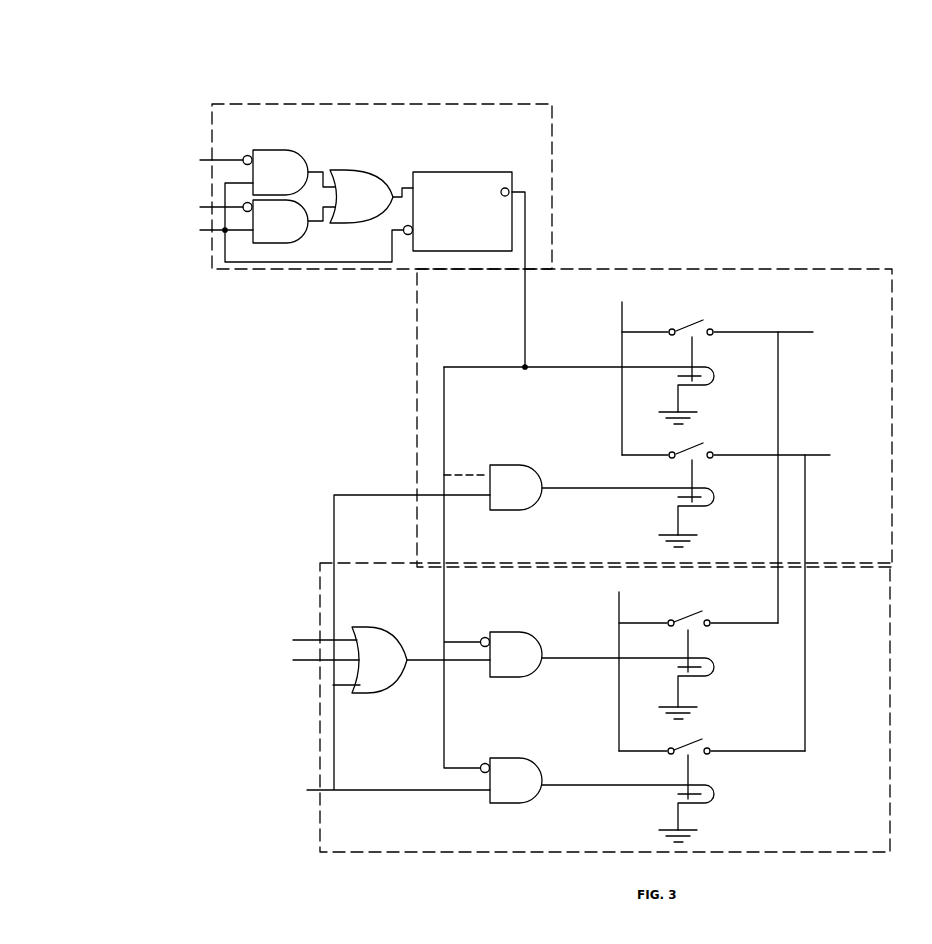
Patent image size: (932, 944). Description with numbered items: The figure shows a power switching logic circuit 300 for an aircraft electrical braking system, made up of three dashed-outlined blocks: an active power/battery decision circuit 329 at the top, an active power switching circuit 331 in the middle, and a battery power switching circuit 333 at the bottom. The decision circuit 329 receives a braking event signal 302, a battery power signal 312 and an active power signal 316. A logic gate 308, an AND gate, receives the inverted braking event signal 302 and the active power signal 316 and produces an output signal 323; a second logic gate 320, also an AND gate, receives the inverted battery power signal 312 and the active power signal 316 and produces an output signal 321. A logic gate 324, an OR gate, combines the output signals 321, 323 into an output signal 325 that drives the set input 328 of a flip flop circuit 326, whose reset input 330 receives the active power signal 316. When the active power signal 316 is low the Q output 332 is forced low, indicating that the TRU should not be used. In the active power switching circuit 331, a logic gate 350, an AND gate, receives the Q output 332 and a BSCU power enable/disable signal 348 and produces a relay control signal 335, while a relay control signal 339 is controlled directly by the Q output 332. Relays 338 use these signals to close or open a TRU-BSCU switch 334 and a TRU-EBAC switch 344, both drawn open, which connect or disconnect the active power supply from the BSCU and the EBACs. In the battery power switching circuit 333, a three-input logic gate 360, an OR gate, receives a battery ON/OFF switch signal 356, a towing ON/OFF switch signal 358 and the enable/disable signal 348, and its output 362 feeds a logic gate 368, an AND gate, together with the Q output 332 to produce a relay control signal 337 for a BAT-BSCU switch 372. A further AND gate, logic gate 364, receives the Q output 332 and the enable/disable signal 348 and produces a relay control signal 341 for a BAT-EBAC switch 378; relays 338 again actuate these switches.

The power switching logic circuit 300 is at (120, 31).
The braking event signal 302 is at (234, 156).
The logic gate 308 is at (266, 150).
The battery power signal 312 is at (205, 205).
The active power signal 316 is at (231, 183).
The logic gate 320 is at (285, 246).
The output signal 321 is at (318, 223).
The output signal 323 is at (323, 170).
The logic gate 324 is at (345, 172).
The output signal 325 is at (400, 188).
The flip flop circuit 326 is at (494, 171).
The set input 328 is at (424, 187).
The active power/battery decision circuit 329 is at (438, 104).
The reset input 330 is at (425, 230).
The active power switching circuit 331 is at (673, 268).
The Q output 332 is at (522, 192).
The battery power switching circuit 333 is at (538, 852).
The TRU-BSCU switch 334 is at (688, 332).
The relay control signal 335 is at (688, 471).
The relay control signal 337 is at (686, 639).
The relays 338 is at (711, 379).
The relay control signal 339 is at (565, 367).
The relay control signal 341 is at (686, 767).
The TRU-EBAC switch 344 is at (680, 455).
The BSCU power enable/disable signal 348 is at (465, 495).
The logic gate 350 is at (513, 465).
The battery ON/OFF switch signal 356 is at (325, 633).
The towing ON/OFF switch signal 358 is at (326, 653).
The logic gate 360 is at (372, 627).
The output 362 is at (480, 661).
The AND gate 364 is at (516, 774).
The logic gate 368 is at (505, 632).
The BAT-BSCU switch 372 is at (680, 623).
The BAT-EBAC switch 378 is at (680, 751).